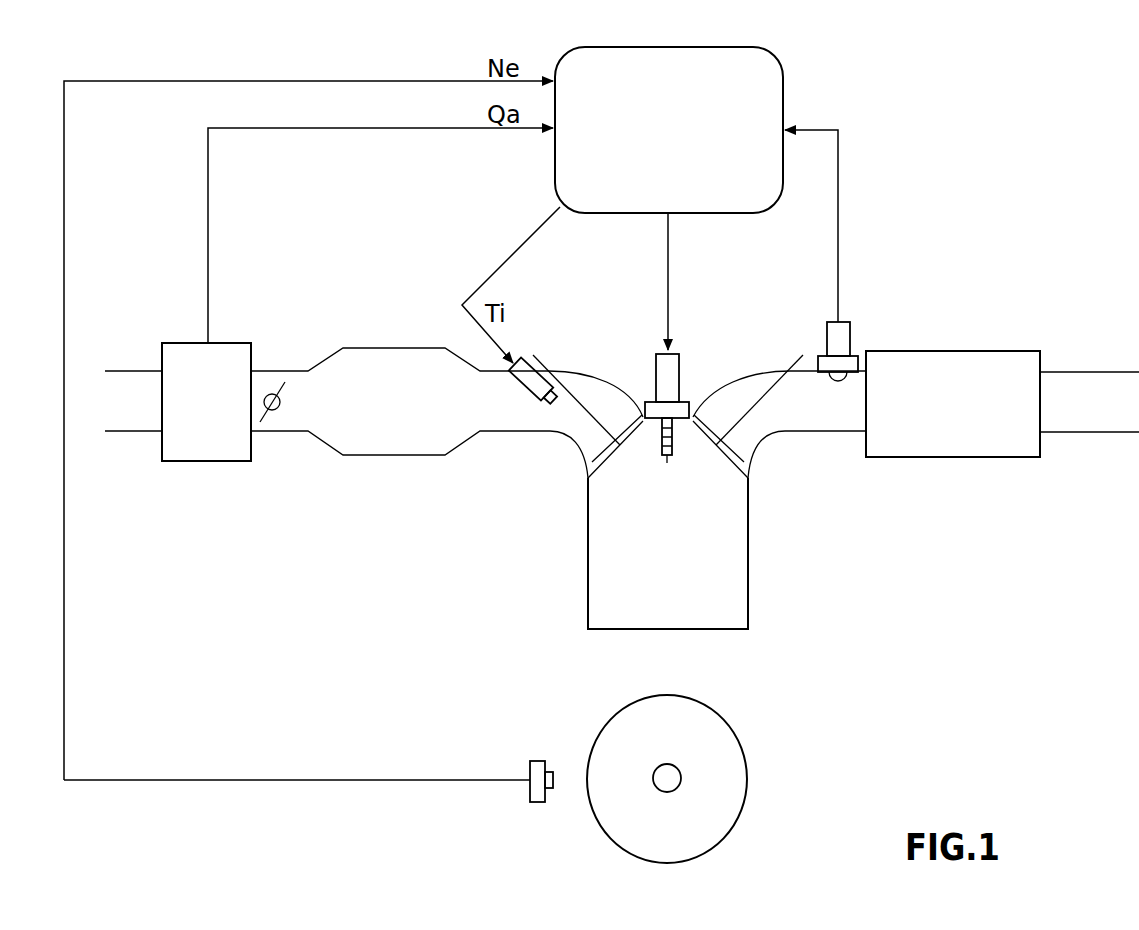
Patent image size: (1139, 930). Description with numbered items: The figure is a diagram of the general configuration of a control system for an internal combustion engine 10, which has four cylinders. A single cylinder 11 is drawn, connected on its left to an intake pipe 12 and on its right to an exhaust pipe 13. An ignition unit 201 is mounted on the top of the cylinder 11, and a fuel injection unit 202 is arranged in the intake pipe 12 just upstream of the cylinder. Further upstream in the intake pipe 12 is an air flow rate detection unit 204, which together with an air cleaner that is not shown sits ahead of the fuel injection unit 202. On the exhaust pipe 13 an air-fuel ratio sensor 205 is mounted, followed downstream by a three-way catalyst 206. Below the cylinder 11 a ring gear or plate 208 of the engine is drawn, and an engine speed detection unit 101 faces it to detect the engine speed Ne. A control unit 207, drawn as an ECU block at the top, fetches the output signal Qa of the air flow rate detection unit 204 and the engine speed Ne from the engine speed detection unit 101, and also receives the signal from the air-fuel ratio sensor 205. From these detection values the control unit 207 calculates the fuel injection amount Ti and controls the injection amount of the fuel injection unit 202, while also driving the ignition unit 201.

The internal combustion engine 10 is at (646, 316).
The cylinder 11 is at (748, 585).
The intake pipe 12 is at (520, 433).
The exhaust pipe 13 is at (817, 433).
The engine speed detection unit 101 is at (535, 760).
The ignition unit 201 is at (680, 377).
The fuel injection unit 202 is at (520, 357).
The air flow rate detection unit 204 is at (232, 343).
The air-fuel ratio sensor 205 is at (850, 330).
The three-way catalyst 206 is at (993, 351).
The control unit 207 is at (783, 76).
The ring gear or plate 208 is at (747, 772).